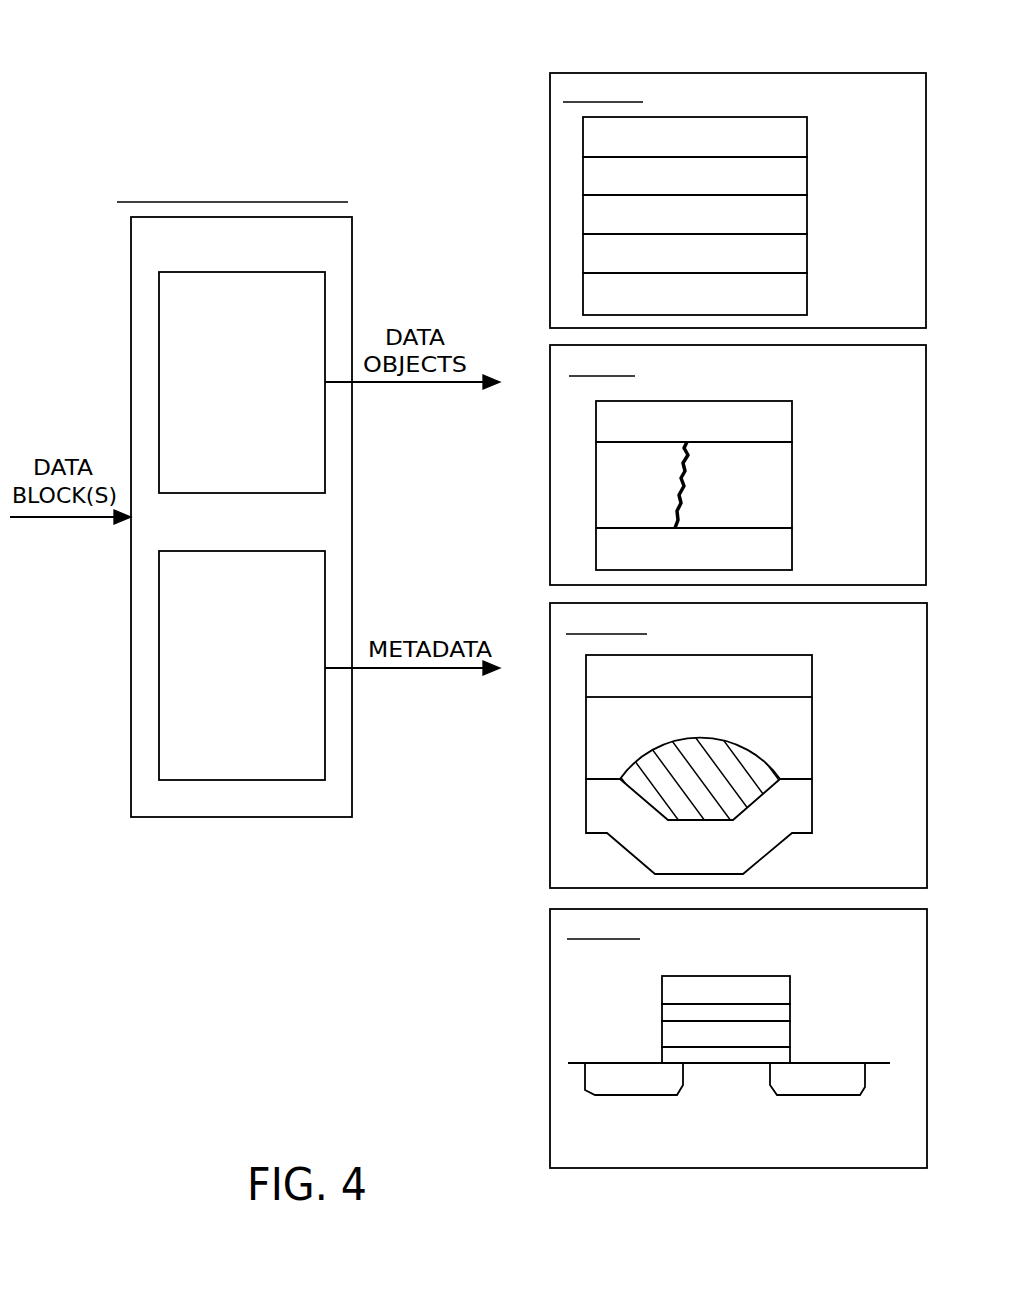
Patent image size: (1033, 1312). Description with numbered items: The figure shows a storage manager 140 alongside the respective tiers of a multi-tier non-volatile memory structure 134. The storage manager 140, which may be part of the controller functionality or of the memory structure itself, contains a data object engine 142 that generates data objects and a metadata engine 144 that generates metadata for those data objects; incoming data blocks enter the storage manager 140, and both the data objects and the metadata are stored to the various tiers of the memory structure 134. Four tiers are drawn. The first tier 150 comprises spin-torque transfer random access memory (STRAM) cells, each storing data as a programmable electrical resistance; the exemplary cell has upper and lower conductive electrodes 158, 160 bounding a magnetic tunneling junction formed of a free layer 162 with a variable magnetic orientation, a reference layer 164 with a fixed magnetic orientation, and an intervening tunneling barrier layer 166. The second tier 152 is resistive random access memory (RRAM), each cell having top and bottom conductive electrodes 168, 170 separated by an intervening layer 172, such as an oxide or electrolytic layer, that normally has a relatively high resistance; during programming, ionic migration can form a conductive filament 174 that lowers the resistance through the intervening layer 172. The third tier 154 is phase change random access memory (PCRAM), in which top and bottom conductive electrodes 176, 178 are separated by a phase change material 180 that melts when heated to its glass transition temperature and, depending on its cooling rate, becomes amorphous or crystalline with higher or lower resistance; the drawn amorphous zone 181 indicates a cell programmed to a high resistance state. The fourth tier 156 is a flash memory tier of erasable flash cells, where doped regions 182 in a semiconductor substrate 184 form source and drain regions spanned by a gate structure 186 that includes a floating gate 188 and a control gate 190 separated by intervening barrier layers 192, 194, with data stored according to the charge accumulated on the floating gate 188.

The memory structure 134 is at (508, 47).
The storage manager 140 is at (352, 252).
The data object engine 142 is at (243, 272).
The metadata engine 144 is at (246, 552).
The first tier 150 is at (905, 102).
The second tier 152 is at (903, 376).
The third tier 154 is at (908, 634).
The fourth tier 156 is at (905, 939).
The upper conductive electrode 158 is at (807, 141).
The lower conductive electrode 160 is at (807, 298).
The free layer 162 is at (807, 181).
The reference layer 164 is at (807, 258).
The tunneling barrier layer 166 is at (807, 219).
The top conductive electrode 168 is at (792, 423).
The bottom conductive electrode 170 is at (792, 551).
The intervening layer 172 is at (792, 488).
The conductive filament 174 is at (687, 492).
The top conductive electrode 176 is at (812, 675).
The bottom conductive electrode 178 is at (812, 812).
The phase change material 180 is at (812, 735).
The amorphous zone 181 is at (740, 742).
The doped regions 182 is at (610, 1098).
The semiconductor substrate 184 is at (825, 1134).
The gate structure 186 is at (728, 1011).
The floating gate 188 is at (662, 1037).
The control gate 190 is at (662, 992).
The intervening barrier layer 192 is at (662, 1058).
The intervening barrier layer 194 is at (662, 1016).